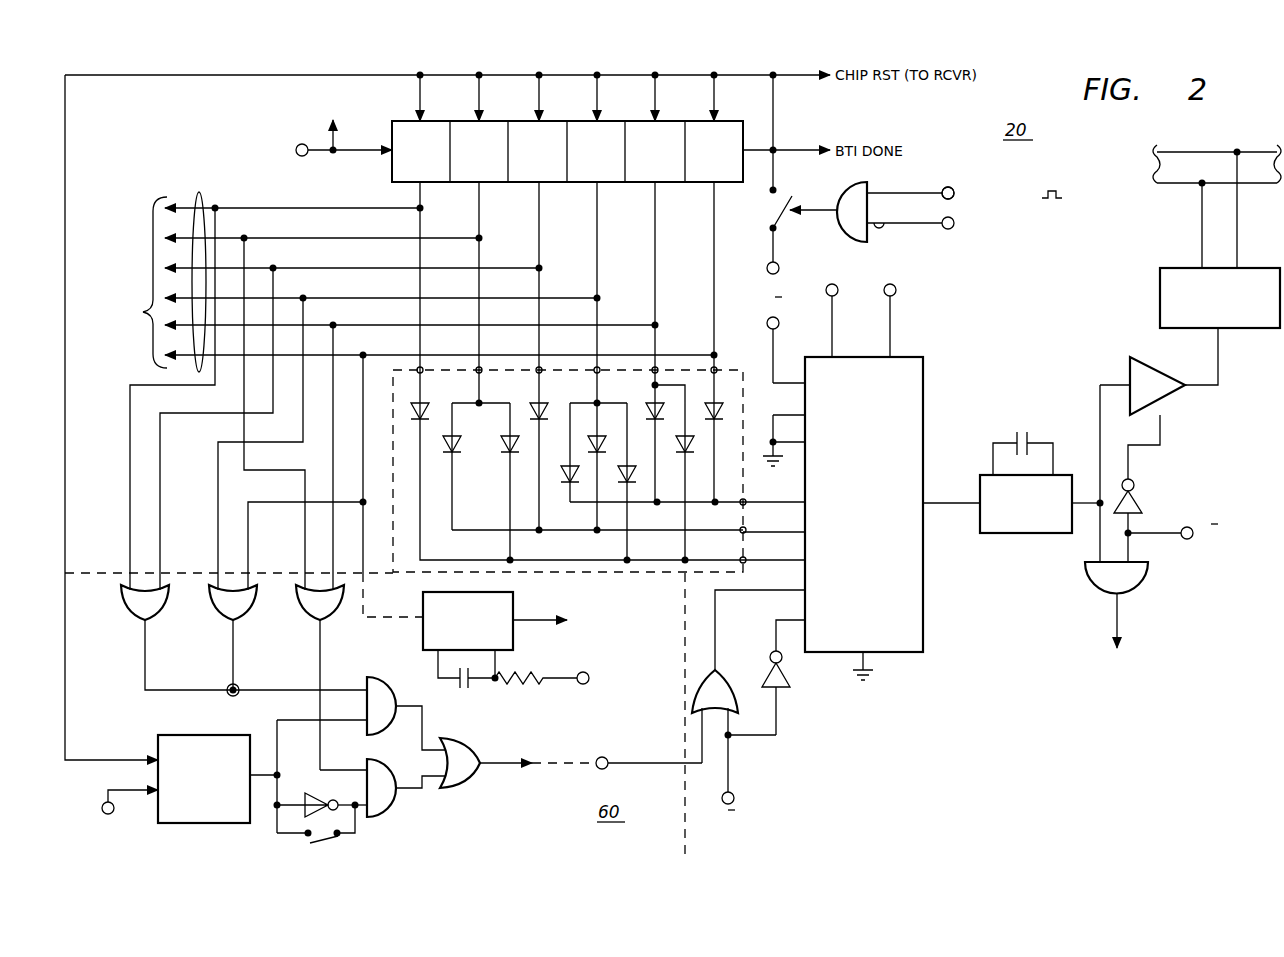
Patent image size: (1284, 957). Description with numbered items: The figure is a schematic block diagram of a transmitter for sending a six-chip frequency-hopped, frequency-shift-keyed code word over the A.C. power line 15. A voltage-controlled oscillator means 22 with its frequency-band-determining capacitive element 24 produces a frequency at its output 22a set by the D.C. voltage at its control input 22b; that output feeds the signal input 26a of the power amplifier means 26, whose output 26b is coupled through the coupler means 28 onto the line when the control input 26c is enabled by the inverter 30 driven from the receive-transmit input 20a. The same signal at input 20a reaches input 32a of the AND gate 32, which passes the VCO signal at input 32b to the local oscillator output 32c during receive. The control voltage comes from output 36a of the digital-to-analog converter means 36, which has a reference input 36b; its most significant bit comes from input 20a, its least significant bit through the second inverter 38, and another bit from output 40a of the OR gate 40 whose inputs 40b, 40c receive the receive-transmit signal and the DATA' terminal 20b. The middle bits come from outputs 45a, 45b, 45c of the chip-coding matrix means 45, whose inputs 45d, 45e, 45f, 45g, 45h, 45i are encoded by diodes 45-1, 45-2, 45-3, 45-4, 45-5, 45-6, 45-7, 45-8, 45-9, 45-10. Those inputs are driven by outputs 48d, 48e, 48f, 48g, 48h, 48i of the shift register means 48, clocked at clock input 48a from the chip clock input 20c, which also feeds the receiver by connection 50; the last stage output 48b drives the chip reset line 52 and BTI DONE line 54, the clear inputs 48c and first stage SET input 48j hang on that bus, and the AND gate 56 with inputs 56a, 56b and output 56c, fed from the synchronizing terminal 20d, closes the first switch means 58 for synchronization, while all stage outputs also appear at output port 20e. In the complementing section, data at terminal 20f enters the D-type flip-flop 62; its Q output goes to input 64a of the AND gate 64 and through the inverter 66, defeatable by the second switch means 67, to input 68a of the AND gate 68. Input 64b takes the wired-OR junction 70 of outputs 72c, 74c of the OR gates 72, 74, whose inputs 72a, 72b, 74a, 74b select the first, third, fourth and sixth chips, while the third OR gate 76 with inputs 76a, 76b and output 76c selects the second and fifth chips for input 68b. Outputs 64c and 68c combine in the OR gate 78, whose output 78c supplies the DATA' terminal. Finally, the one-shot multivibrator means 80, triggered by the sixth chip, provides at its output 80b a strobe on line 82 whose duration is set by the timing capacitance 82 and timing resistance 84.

The A.C. power line 15 is at (1200, 164).
The first transmitter input 20a is at (772, 330).
The transmit-data DATA' input terminal 20b is at (594, 756).
The chip clock input 20c is at (295, 156).
The auxiliary transmitter means input terminal 20d is at (948, 188).
The transmitter output port 20e is at (192, 200).
The transmitter terminal 20f is at (100, 806).
The voltage-controlled oscillator means 22 is at (1020, 536).
The VCO means output 22a is at (1078, 500).
The VCO means control input 22b is at (972, 502).
The frequency-band-determining capacitive element 24 is at (1016, 438).
The power amplifier means 26 is at (1173, 374).
The signal input 26a is at (1112, 384).
The power amplifier output 26b is at (1206, 386).
The control input 26c is at (1162, 410).
The coupler means 28 is at (1160, 286).
The inverter 30 is at (1144, 502).
The first two-input AND gate 32 is at (1136, 584).
The first AND gate input 32a is at (1136, 556).
The second AND gate input 32b is at (1088, 556).
The first AND gate output 32c is at (1108, 594).
The digital-to-analog converter means 36 is at (882, 656).
The analog voltage output 36a is at (926, 508).
The reference input 36b is at (894, 352).
The second logic inverter 38 is at (788, 682).
The first two-input OR gate 40 is at (714, 682).
The OR gate output 40a is at (706, 670).
The first input 40b is at (736, 735).
The remaining input 40c is at (694, 740).
The chip-coding matrix means 45 is at (599, 443).
The first output 45a is at (752, 562).
The second output 45b is at (752, 534).
The third output 45c is at (752, 504).
The first input 45d is at (428, 368).
The second input 45e is at (488, 368).
The third input 45f is at (548, 368).
The fourth input 45g is at (604, 368).
The fifth input 45h is at (662, 368).
The sixth input 45i is at (710, 360).
The first diode 45-1 is at (430, 414).
The diode 45-2 is at (458, 450).
The diode 45-3 is at (508, 416).
The fourth diode 45-4 is at (551, 414).
The diode 45-5 is at (533, 462).
The diode 45-6 is at (580, 484).
The diode 45-7 is at (632, 482).
The diode 45-8 is at (638, 410).
The diode 45-9 is at (702, 450).
The final diode 45-10 is at (727, 390).
The shift register means 48 is at (724, 194).
The clock C input 48a is at (373, 150).
The output from the last serial register stage 48b is at (738, 134).
The clear inputs 48c is at (496, 90).
The first stage Q output 48d is at (426, 192).
The second stage Q output 48e is at (484, 202).
The third stage Q output 48f is at (542, 210).
The fourth stage Q output 48g is at (600, 218).
The fifth stage Q output 48h is at (658, 234).
The sixth stage Q output 48i is at (714, 232).
The first stage SET input 48j is at (424, 92).
The connection 50 is at (324, 134).
The chip reset line 52 is at (124, 80).
The completed bit time interval line 54 is at (780, 148).
The two-input AND gate 56 is at (840, 192).
The first input 56a is at (878, 194).
The second input 56b is at (882, 222).
The gate output 56c is at (830, 220).
The first switch means 58 is at (766, 198).
The D-type flip-flop logic element 62 is at (202, 822).
The two-input AND gate 64 is at (393, 668).
The first input 64a is at (308, 720).
The second input 64b is at (350, 688).
The first AND gate output 64c is at (426, 728).
The logic inverter 66 is at (306, 790).
The second switch means 67 is at (322, 850).
The two-input AND gate 68 is at (382, 816).
The first input 68a is at (356, 802).
The remaining input 68b is at (345, 754).
The second AND gate output 68c is at (408, 772).
The wired-OR junction 70 is at (226, 694).
The first two-input OR gate 72 is at (120, 604).
The first gate first input 72a is at (128, 568).
The remaining input 72b is at (160, 562).
The first OR gate output 72c is at (148, 632).
The second two-input OR gate 74 is at (212, 604).
The first input 74a is at (216, 538).
The remaining input 74b is at (244, 560).
The second OR gate output 74c is at (236, 632).
The third OR gate 76 is at (300, 604).
The first input 76a is at (304, 538).
The remaining input 76b is at (332, 514).
The third OR gate output 76c is at (322, 624).
The two-input OR gate 78 is at (475, 796).
The output 78c is at (504, 768).
The monostable one-shot multivibrator OSM means 80 is at (418, 604).
The output 80b is at (528, 612).
The strobe line / timing capacitance 82 is at (571, 612).
The timing resistance 84 is at (526, 678).